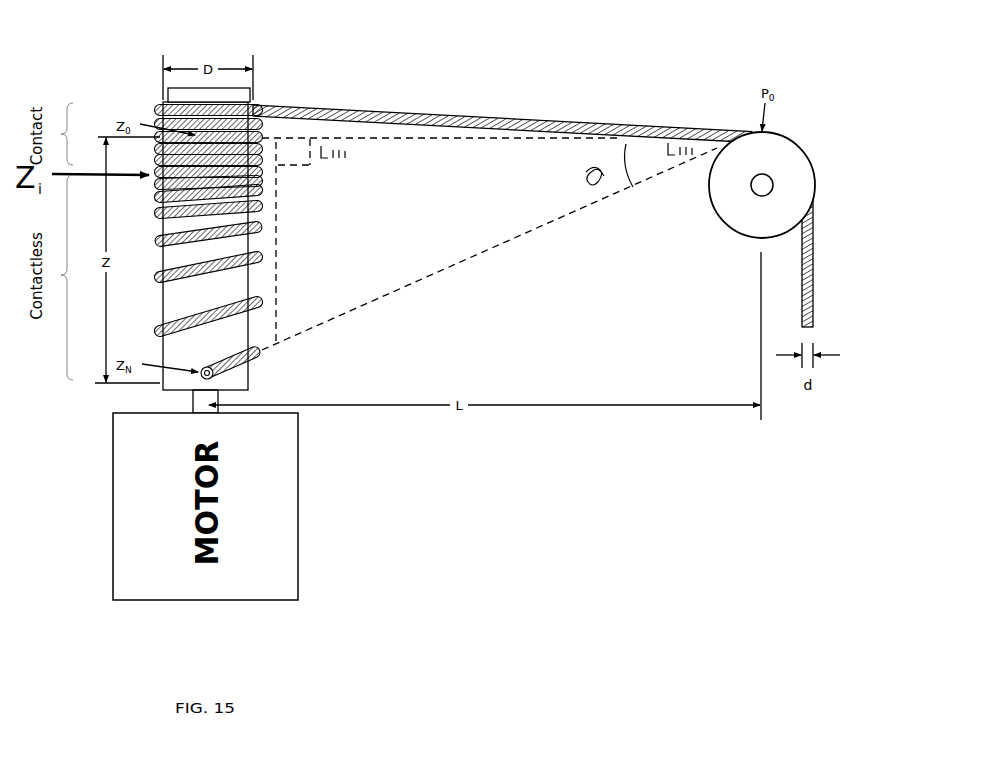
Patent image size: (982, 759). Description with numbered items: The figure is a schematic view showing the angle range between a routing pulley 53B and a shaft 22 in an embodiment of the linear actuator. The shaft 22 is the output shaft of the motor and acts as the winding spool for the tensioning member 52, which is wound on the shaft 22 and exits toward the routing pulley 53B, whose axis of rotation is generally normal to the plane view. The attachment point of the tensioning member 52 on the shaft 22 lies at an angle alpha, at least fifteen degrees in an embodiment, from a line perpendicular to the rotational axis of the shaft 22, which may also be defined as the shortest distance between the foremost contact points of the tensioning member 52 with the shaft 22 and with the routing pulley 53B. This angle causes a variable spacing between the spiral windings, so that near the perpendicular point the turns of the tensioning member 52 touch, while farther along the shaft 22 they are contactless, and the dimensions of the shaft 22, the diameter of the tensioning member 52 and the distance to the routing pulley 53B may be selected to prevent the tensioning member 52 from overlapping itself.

The shaft 22 is at (233, 93).
The tensioning member 52 is at (483, 120).
The routing pulley 53B is at (790, 160).